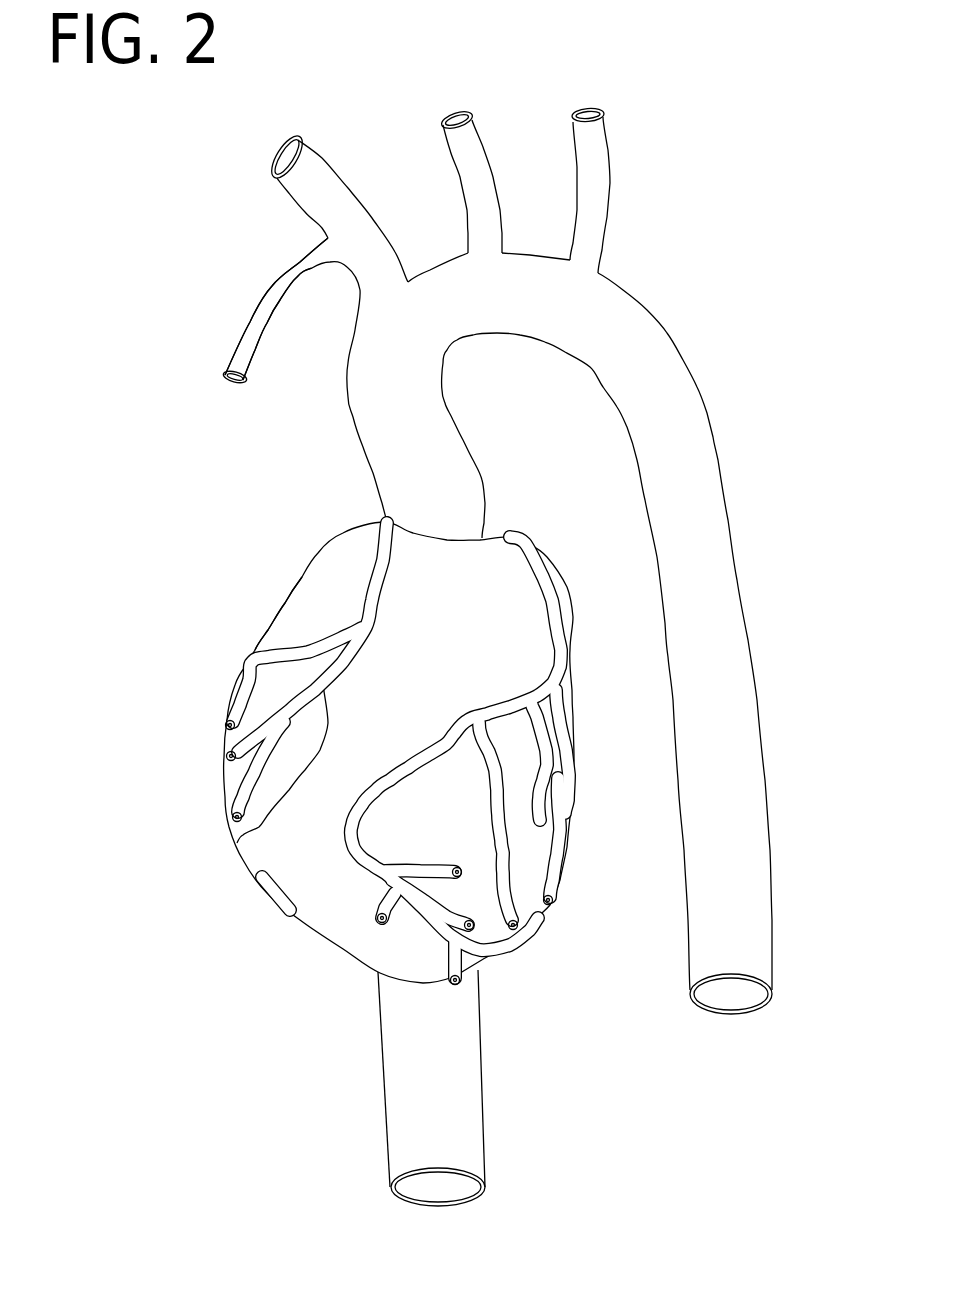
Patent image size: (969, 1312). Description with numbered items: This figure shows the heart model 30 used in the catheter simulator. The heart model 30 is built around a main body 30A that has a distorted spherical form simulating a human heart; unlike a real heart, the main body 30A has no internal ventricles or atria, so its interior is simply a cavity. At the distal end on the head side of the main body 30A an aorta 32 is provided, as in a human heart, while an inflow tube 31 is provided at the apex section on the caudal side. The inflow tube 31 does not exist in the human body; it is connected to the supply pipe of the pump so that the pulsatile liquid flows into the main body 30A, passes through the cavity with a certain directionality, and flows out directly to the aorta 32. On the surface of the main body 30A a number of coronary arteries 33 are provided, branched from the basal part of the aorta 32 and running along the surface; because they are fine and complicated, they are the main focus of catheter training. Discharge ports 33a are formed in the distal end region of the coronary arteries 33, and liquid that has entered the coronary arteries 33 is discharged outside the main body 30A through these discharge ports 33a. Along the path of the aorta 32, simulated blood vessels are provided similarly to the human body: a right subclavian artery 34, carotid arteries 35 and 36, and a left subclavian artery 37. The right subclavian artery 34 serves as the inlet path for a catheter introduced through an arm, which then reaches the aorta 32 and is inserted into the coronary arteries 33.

The heart model 30 is at (292, 550).
The main body 30A is at (283, 630).
The inflow tube 31 is at (467, 1123).
The aorta 32 is at (430, 417).
The coronary arteries 33 is at (563, 647).
The discharge ports 33a is at (228, 756).
The right subclavian artery 34 is at (247, 325).
The carotid artery 35 is at (327, 170).
The carotid artery 36 is at (478, 168).
The left subclavian artery 37 is at (600, 200).